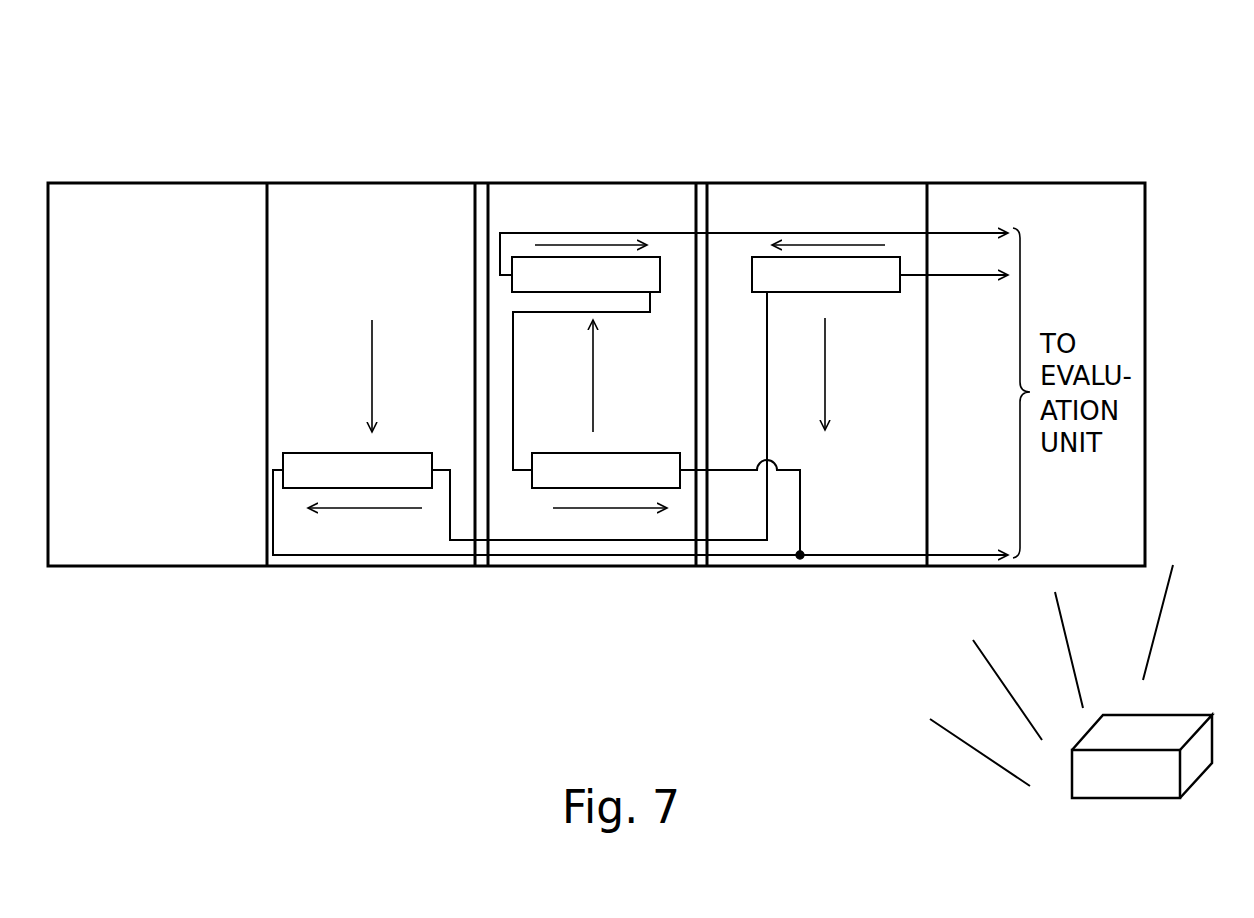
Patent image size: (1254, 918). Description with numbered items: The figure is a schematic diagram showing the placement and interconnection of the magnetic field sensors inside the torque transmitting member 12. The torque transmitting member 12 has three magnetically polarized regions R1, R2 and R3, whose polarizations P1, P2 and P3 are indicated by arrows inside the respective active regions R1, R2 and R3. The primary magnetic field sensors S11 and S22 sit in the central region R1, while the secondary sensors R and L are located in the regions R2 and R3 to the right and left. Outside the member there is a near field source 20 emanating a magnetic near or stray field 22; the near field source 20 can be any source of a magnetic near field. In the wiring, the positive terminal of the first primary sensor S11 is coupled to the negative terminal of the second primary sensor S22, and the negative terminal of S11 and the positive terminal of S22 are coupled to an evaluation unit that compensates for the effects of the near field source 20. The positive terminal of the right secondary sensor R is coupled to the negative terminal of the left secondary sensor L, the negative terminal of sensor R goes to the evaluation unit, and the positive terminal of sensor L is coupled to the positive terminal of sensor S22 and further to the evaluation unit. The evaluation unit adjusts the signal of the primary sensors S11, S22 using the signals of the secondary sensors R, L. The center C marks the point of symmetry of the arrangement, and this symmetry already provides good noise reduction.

The torque transmitting member 12 is at (1055, 183).
The first magnetically polarized region R1 is at (595, 183).
The second magnetically polarized region R2 is at (814, 183).
The third magnetically polarized region R3 is at (375, 183).
The first primary magnetic field sensor S11 is at (588, 274).
The second primary magnetic field sensor S22 is at (607, 470).
The right secondary magnetic field sensor R is at (826, 274).
The left secondary magnetic field sensor L is at (357, 470).
The polarization of first region P1 is at (612, 376).
The polarization of second region P2 is at (847, 374).
The polarization of third region P3 is at (391, 376).
The center C is at (581, 381).
The near field source 20 is at (1165, 715).
The magnetic near field 22 is at (1040, 675).